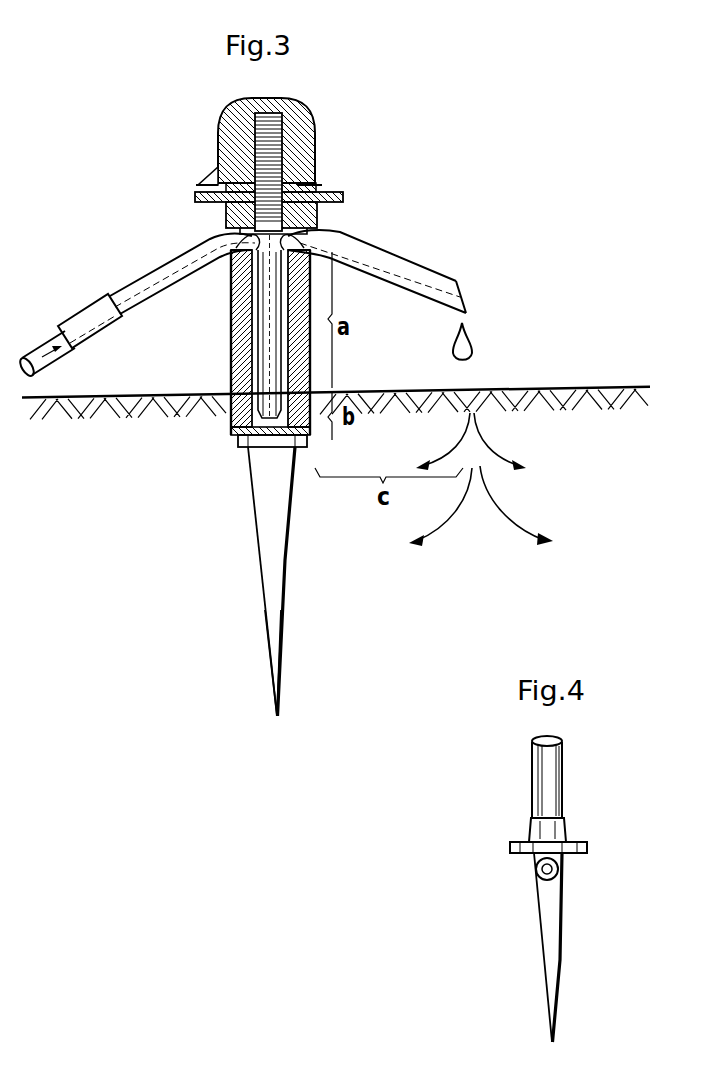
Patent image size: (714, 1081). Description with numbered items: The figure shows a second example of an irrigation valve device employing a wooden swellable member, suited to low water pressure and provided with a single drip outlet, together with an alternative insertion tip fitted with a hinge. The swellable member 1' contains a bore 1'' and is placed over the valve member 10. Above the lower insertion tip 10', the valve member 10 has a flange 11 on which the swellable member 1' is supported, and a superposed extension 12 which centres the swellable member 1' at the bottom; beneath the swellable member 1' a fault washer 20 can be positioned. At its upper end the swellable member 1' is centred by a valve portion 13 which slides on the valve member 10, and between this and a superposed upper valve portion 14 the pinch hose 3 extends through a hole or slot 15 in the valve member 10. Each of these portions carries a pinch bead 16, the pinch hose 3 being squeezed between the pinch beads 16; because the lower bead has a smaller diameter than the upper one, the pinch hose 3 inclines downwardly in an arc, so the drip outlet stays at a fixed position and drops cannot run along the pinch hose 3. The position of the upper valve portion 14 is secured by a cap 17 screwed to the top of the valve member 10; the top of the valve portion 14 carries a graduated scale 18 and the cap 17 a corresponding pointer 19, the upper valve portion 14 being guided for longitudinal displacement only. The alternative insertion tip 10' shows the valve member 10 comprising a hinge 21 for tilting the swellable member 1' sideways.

In FIG. 3, the cap 17 is at (302, 138).
In FIG. 3, the pointer 19 is at (212, 178).
In FIG. 3, the graduated scale 18 is at (194, 197).
In FIG. 3, the upper valve portion 14 is at (300, 199).
In FIG. 3, the hole or slot 15 is at (305, 229).
In FIG. 3, the pinch hose 3 is at (143, 274).
In FIG. 3, the valve portion 13 is at (236, 255).
In FIG. 3, the pinch bead 16 is at (322, 254).
In FIG. 3, the swellable member 1' is at (256, 338).
In FIG. 3, the bore 1'' is at (308, 265).
In FIG. 3, the extension 12 is at (232, 396).
In FIG. 4, the extension 12 is at (556, 827).
In FIG. 3, the fault washer 20 is at (235, 432).
In FIG. 3, the flange 11 is at (243, 447).
In FIG. 4, the flange 11 is at (588, 848).
In FIG. 3, the valve member 10 is at (252, 581).
In FIG. 4, the valve member 10 is at (528, 777).
In FIG. 3, the insertion tip 10' is at (254, 656).
In FIG. 4, the insertion tip 10' is at (570, 947).
In FIG. 4, the hinge 21 is at (560, 877).